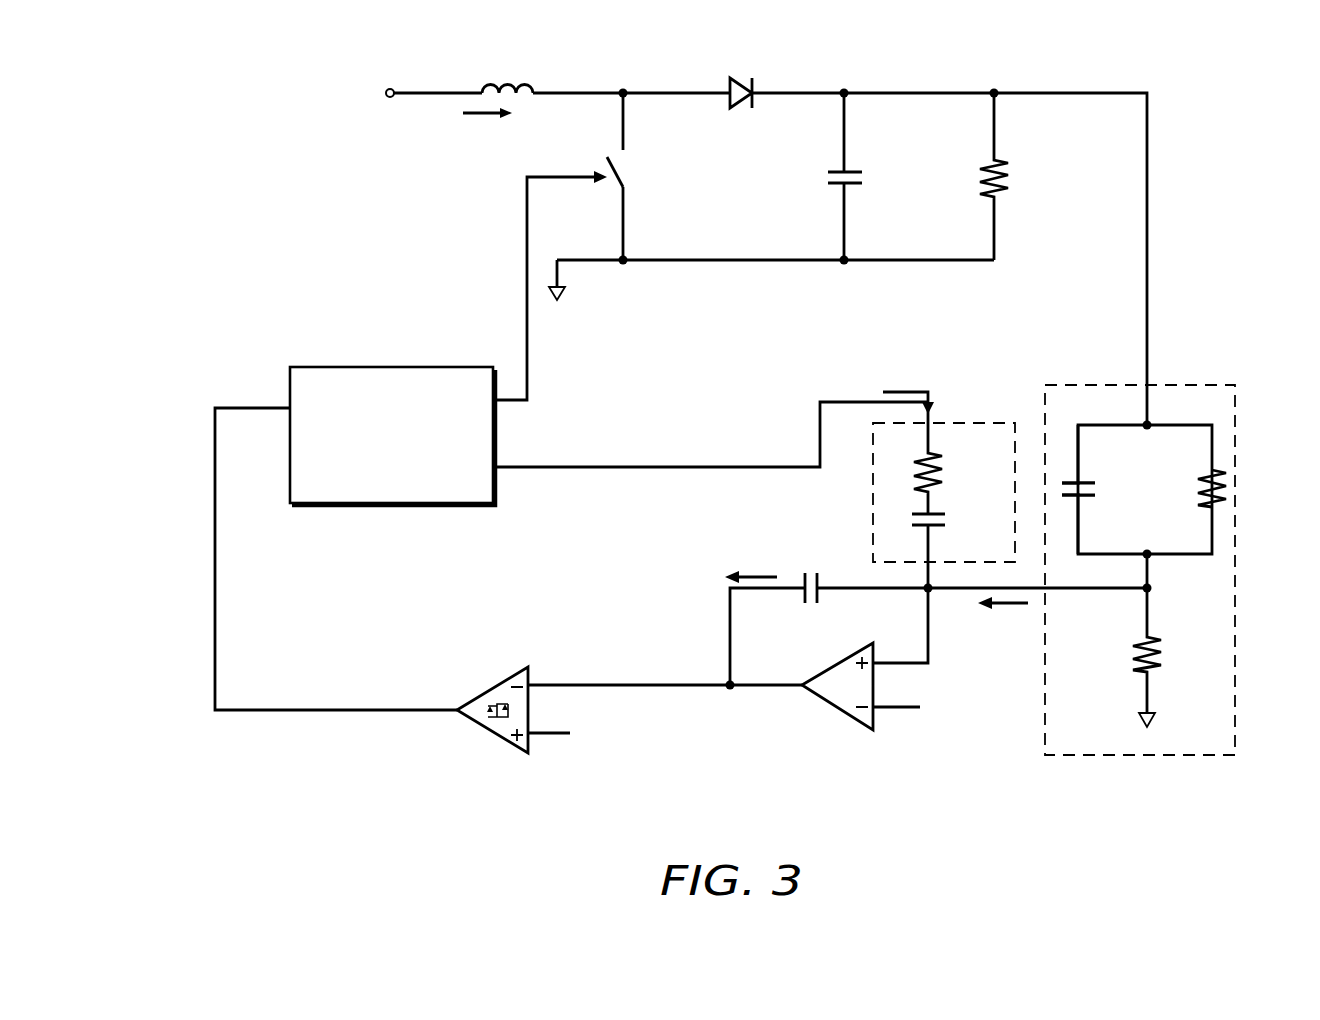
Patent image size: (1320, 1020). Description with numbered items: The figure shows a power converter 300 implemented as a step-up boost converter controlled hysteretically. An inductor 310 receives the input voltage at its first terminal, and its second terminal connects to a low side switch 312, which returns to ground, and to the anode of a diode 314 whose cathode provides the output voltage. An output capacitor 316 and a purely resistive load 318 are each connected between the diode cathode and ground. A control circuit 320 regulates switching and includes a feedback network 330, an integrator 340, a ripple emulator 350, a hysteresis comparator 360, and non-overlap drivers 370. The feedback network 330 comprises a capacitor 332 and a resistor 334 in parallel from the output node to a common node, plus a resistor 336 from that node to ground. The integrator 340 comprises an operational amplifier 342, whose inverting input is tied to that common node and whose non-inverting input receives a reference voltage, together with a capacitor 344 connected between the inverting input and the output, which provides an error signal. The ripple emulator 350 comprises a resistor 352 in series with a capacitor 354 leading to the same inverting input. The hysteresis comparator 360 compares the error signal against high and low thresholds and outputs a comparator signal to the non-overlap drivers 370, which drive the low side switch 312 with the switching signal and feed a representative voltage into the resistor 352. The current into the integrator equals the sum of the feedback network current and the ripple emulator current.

The power converter 300 is at (177, 67).
The inductor 310 is at (508, 85).
The low side switch 312 is at (622, 166).
The diode 314 is at (755, 80).
The output capacitor 316 is at (862, 172).
The load 318 is at (1008, 170).
The control circuit 320 is at (183, 530).
The feedback network 330 is at (1180, 385).
The capacitor 332 is at (1092, 483).
The resistor 334 is at (1198, 492).
The resistor 336 is at (1132, 660).
The integrator 340 is at (712, 614).
The operational amplifier 342 is at (845, 717).
The capacitor 344 is at (820, 600).
The ripple emulator 350 is at (945, 423).
The resistor 352 is at (940, 463).
The capacitor 354 is at (944, 514).
The hysteresis comparator 360 is at (478, 727).
The non-overlap drivers 370 is at (393, 367).